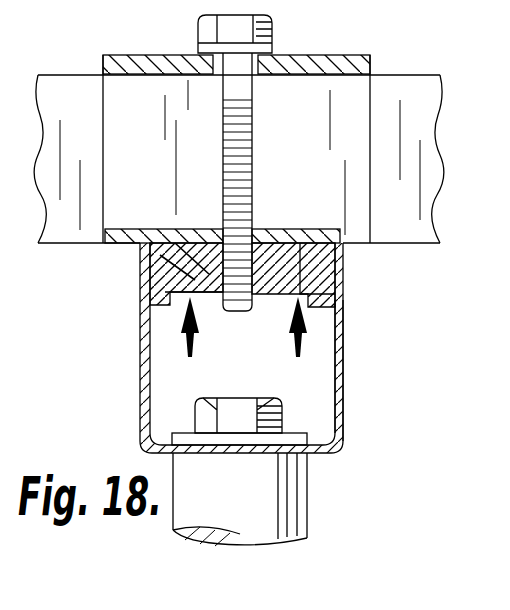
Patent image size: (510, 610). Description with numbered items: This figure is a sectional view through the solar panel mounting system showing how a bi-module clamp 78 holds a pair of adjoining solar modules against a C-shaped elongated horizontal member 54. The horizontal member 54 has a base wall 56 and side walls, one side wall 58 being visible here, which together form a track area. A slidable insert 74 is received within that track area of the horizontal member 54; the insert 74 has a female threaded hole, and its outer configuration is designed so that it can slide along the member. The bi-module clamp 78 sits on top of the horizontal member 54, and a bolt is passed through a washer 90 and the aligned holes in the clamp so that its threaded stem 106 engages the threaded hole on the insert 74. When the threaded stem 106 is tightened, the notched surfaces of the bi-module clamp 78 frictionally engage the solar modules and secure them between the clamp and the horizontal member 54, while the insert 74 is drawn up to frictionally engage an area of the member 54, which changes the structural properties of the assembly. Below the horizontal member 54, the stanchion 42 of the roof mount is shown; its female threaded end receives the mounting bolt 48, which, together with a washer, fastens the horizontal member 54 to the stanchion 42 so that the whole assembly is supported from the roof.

The bi-module clamp 78 is at (173, 53).
The washer 90 is at (273, 52).
The threaded stem 106 is at (342, 280).
The slidable insert 74 is at (140, 288).
The horizontal member 54 is at (140, 368).
The side wall 58 is at (343, 370).
The mounting bolt 48 is at (283, 414).
The base wall 56 is at (343, 453).
The stanchion 42 is at (308, 500).